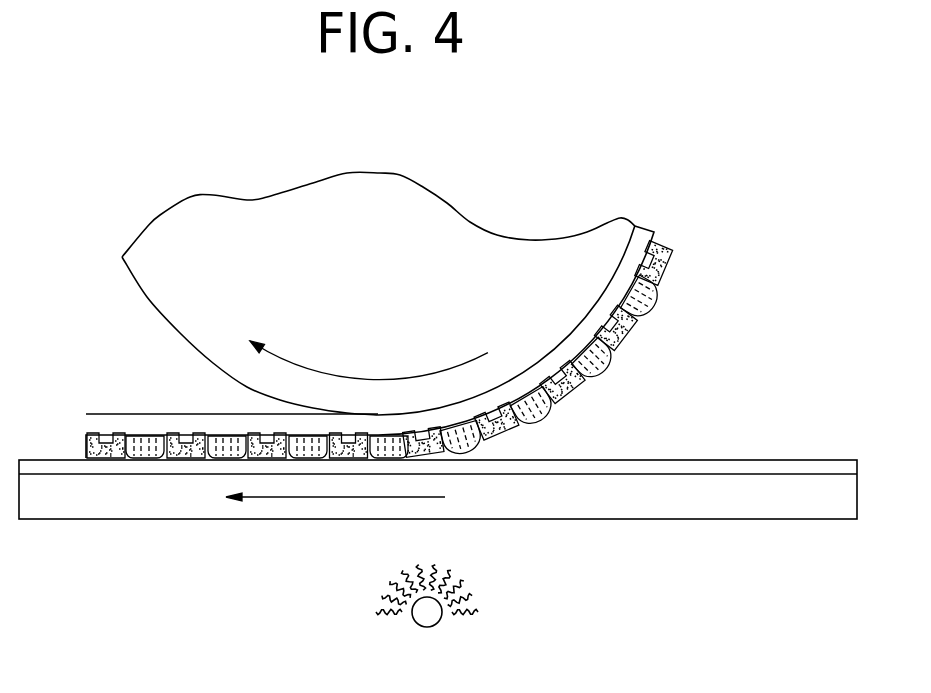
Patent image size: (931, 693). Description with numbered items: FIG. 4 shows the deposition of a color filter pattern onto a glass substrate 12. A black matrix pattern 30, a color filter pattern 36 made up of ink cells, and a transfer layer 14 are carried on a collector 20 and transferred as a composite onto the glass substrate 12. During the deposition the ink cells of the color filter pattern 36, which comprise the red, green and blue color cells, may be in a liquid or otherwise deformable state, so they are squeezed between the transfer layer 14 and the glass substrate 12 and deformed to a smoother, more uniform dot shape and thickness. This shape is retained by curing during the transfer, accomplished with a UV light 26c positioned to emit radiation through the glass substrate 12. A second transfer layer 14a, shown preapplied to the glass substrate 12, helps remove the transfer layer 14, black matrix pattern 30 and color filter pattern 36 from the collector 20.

The glass substrate 12 is at (676, 492).
The transfer layer 14 is at (622, 292).
The second transfer layer 14a is at (748, 465).
The collector 20 is at (384, 234).
The UV light 26c is at (427, 618).
The black matrix pattern 30 is at (626, 333).
The color filter pattern 36 is at (660, 301).